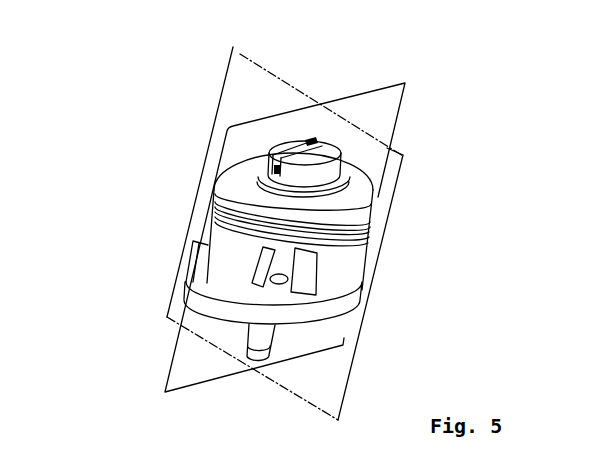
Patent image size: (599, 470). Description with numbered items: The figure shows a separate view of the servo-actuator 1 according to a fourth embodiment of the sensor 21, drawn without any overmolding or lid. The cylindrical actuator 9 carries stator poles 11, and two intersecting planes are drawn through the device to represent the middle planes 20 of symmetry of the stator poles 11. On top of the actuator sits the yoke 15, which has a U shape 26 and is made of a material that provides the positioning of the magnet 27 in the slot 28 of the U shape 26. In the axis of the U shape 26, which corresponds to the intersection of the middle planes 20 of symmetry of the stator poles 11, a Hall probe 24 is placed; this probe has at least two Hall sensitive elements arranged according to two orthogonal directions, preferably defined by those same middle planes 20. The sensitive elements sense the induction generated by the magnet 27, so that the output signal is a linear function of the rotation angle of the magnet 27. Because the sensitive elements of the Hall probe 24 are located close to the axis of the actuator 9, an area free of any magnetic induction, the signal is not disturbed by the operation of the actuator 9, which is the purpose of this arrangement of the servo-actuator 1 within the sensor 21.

The servo-actuator 1 is at (141, 69).
The actuator 9 is at (170, 220).
The stator poles 11 is at (355, 262).
The yoke 15 is at (381, 204).
The middle planes of symmetry 20 is at (224, 388).
The sensor 21 is at (358, 149).
The Hall probe 24 is at (314, 129).
The U shape 26 is at (280, 129).
The magnet 27 is at (270, 144).
The slot 28 is at (281, 166).